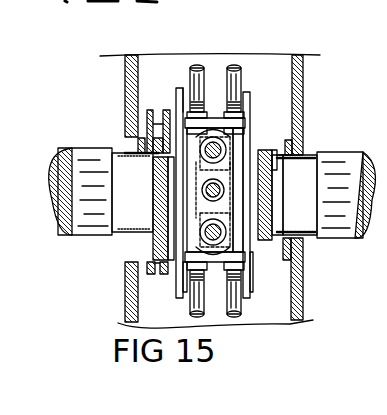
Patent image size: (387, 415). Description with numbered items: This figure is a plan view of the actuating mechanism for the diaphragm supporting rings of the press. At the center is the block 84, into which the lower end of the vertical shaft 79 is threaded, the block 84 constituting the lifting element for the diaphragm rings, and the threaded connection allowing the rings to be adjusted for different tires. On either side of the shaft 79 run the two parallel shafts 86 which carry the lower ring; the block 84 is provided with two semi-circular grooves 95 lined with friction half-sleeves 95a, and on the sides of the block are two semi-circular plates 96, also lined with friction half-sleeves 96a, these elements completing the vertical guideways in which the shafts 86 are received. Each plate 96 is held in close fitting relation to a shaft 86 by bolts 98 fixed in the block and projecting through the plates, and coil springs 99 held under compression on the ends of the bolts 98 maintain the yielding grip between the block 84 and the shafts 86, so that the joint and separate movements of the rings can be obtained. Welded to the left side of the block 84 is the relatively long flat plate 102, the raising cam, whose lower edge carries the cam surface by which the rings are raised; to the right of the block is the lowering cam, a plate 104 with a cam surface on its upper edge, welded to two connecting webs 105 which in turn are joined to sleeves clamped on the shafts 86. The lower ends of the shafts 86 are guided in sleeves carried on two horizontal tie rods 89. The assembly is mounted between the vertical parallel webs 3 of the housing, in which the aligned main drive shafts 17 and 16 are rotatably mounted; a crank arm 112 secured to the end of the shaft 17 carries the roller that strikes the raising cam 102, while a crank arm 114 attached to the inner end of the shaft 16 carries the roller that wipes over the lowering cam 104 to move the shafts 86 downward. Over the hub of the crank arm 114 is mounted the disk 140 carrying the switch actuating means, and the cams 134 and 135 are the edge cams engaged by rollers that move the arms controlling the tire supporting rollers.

The vertical parallel webs 3 is at (125, 82).
The main drive shaft 16 is at (334, 160).
The companion main drive shaft 17 is at (90, 160).
The vertical shaft 79 is at (270, 184).
The block 84 is at (228, 150).
The parallel shafts 86 is at (180, 118).
The horizontal tie rods 89 is at (225, 325).
The semi-circular grooves 95 is at (205, 188).
The friction half-sleeves 95a is at (212, 190).
The semi-circular plates 96 is at (246, 118).
The friction half-sleeves 96a is at (202, 155).
The bolts 98 is at (238, 102).
The coil springs 99 is at (180, 266).
The flat plate (raising cam) 102 is at (184, 92).
The plate (lowering cam) 104 is at (246, 295).
The connecting webs 105 is at (219, 118).
The crank arm 112 is at (162, 252).
The crank arm 114 is at (304, 266).
The cam 134 is at (140, 278).
The cam 135 is at (150, 265).
The disk 140 is at (297, 130).